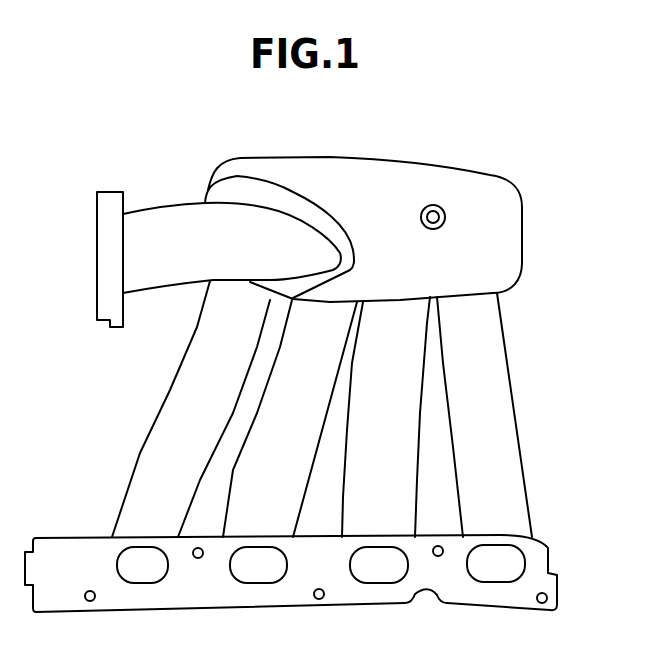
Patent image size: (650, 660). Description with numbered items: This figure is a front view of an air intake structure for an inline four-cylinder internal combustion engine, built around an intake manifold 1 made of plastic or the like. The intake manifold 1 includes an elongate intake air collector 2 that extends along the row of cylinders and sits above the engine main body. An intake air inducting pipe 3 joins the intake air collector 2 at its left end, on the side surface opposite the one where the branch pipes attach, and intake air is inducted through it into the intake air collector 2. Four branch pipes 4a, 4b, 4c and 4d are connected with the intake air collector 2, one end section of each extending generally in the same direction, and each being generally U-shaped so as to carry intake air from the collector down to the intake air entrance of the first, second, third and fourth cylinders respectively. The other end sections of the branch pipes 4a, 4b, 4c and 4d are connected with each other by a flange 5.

The intake manifold 1 is at (505, 168).
The intake air collector 2 is at (363, 193).
The intake air inducting pipe 3 is at (167, 230).
The first branch pipe 4a is at (183, 395).
The second branch pipe 4b is at (303, 343).
The third branch pipe 4c is at (413, 330).
The fourth branch pipe 4d is at (497, 395).
The flange 5 is at (538, 555).